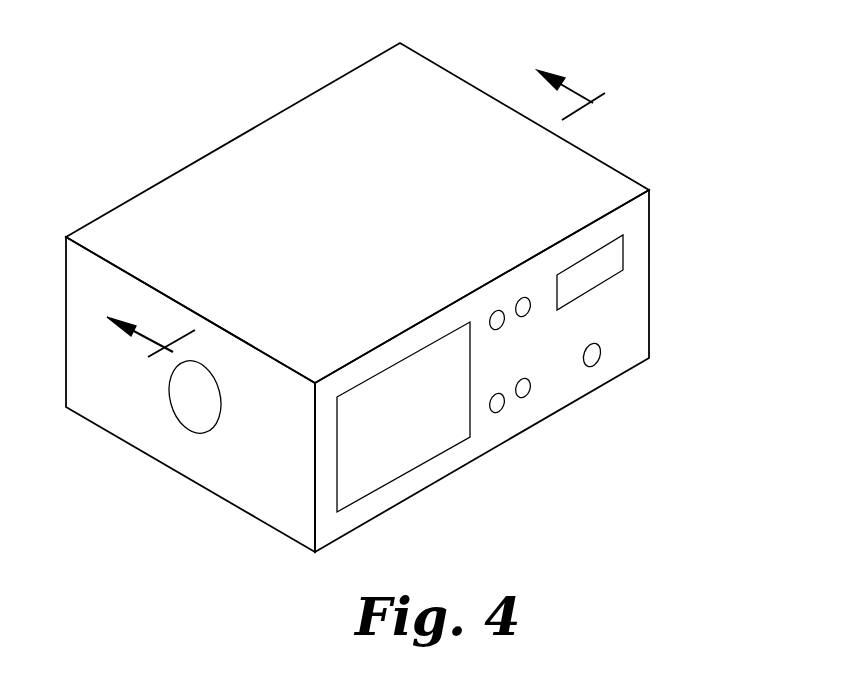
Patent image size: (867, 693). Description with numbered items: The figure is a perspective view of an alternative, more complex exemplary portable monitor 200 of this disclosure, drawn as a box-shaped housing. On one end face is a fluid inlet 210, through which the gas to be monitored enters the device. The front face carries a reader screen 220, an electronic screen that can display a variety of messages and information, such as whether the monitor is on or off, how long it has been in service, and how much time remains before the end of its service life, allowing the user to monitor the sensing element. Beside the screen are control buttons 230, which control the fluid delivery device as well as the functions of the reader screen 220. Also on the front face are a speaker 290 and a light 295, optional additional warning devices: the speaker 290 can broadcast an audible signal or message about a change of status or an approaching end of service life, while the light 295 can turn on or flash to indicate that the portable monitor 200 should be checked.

The portable monitor 200 is at (672, 100).
The fluid inlet 210 is at (196, 414).
The reader screen 220 is at (405, 453).
The control buttons 230 is at (521, 298).
The speaker 290 is at (615, 255).
The light 295 is at (594, 366).